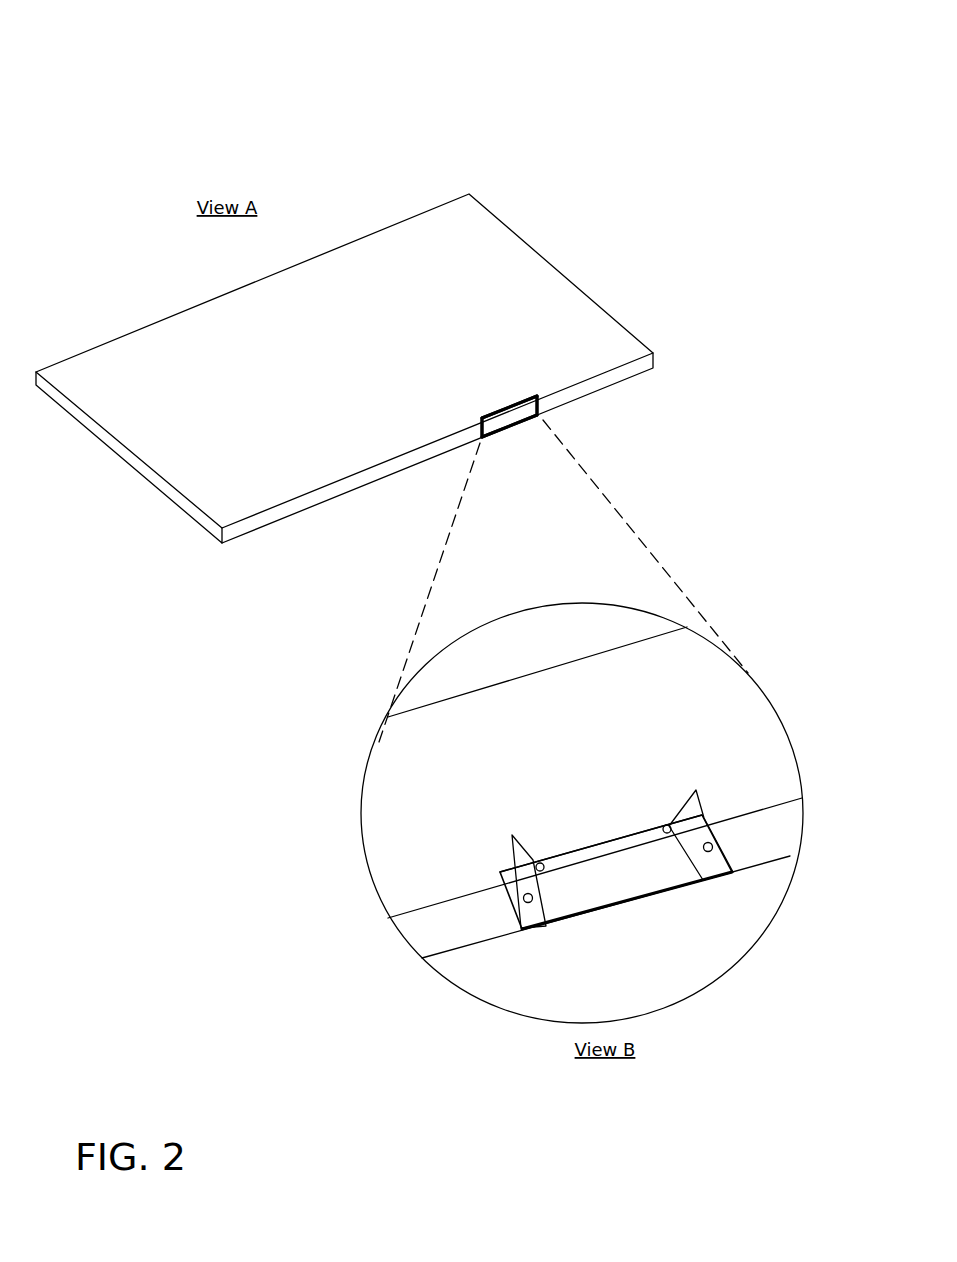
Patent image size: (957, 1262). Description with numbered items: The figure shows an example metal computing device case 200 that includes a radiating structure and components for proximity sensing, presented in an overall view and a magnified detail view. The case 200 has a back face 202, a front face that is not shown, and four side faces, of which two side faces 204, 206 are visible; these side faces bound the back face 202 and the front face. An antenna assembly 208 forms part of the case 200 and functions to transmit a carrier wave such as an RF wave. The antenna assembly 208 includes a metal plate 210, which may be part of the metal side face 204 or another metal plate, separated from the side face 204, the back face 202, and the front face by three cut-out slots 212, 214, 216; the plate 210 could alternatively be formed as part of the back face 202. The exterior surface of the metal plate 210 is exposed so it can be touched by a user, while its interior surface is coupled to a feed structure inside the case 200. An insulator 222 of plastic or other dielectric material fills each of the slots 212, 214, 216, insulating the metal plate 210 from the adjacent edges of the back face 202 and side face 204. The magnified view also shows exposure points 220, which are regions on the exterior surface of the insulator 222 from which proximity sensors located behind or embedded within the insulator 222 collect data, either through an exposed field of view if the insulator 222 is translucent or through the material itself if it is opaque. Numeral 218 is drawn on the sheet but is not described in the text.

The metal computing device case 200 is at (161, 63).
The back face 202 is at (502, 270).
The side face 204 is at (592, 385).
The side face 206 is at (182, 503).
The antenna assembly 208 is at (531, 442).
The metal plate 210 is at (510, 423).
The cut-out slot 212 is at (541, 408).
The cut-out slot 214 is at (485, 428).
The cut-out slot 216 is at (503, 410).
The bottom edge of bracket 218 is at (493, 435).
The exposure points 220 is at (512, 835).
The insulator 222 is at (477, 410).